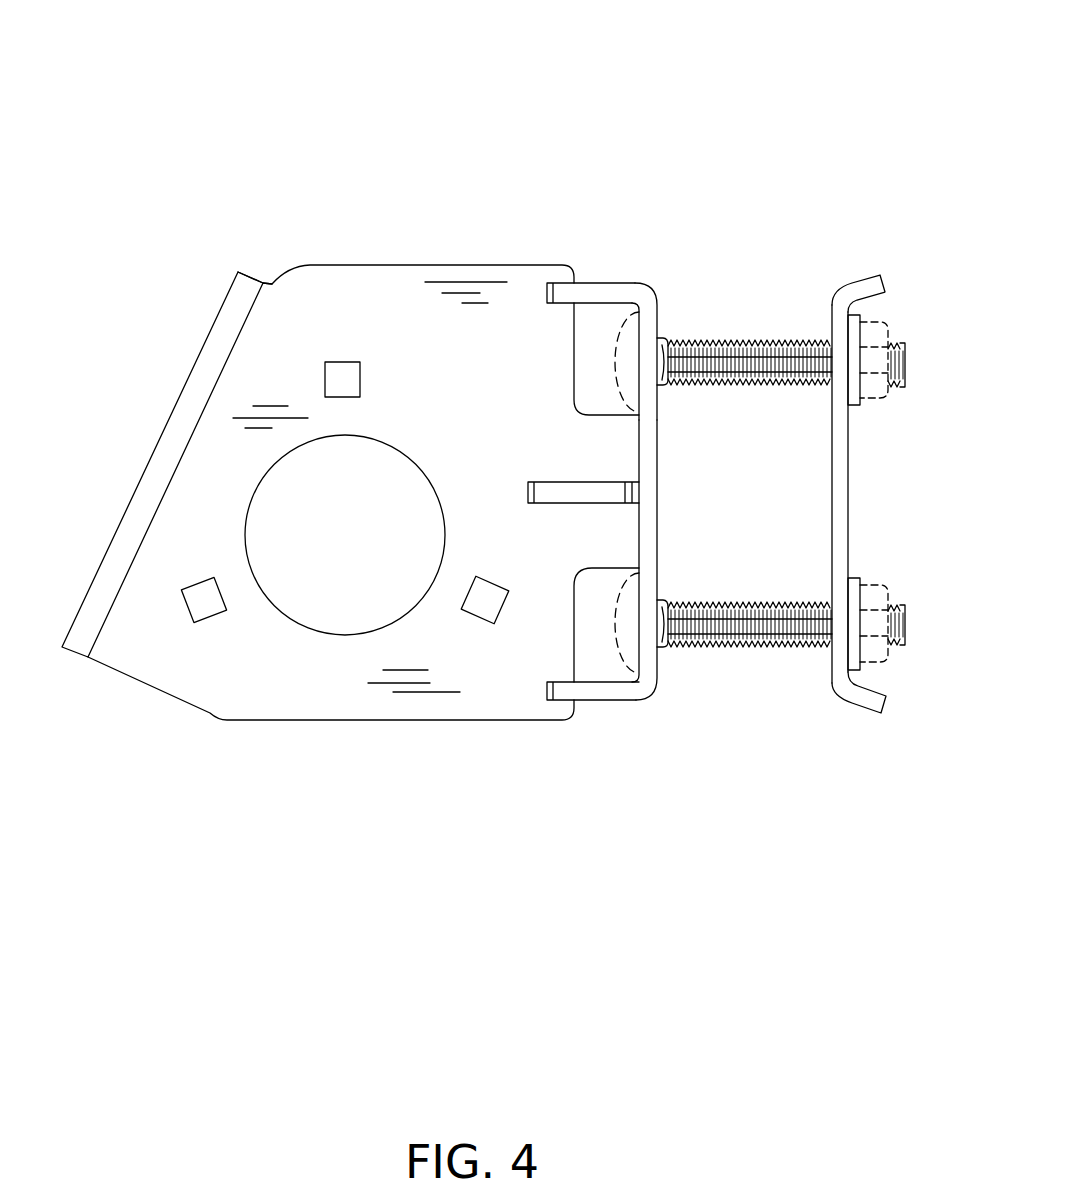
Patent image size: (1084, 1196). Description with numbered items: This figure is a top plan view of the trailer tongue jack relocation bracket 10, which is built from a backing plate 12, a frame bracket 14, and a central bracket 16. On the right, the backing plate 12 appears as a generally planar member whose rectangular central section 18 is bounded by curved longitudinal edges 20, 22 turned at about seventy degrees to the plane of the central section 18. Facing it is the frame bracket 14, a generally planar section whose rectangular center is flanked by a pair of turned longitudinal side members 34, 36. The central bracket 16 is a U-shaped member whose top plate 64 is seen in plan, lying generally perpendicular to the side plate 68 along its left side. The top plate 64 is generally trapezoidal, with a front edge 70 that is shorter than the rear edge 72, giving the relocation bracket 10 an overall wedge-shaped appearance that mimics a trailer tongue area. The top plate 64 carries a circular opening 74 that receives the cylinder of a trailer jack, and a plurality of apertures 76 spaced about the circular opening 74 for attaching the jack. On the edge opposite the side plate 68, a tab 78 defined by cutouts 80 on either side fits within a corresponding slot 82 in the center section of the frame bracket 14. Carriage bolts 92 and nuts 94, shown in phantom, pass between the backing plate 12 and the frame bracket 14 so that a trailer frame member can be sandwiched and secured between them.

The trailer tongue jack relocation bracket 10 is at (668, 70).
The backing plate 12 is at (862, 460).
The frame bracket 14 is at (664, 295).
The central bracket 16 is at (279, 262).
The rectangular central section 18 is at (843, 511).
The curved longitudinal edge 20 is at (872, 704).
The curved longitudinal edge 22 is at (868, 285).
The turned longitudinal side member 34 is at (593, 700).
The turned longitudinal side member 36 is at (614, 268).
The top plate 64 is at (458, 392).
The side plate 68 is at (135, 487).
The front edge 70 is at (416, 262).
The rear edge 72 is at (400, 720).
The circular opening 74 is at (420, 473).
The aperture 76 is at (362, 378).
The tab 78 is at (625, 445).
The cutout 80 is at (577, 323).
The slot 82 is at (622, 527).
The carriage bolt 92 is at (748, 648).
The nut 94 is at (885, 588).